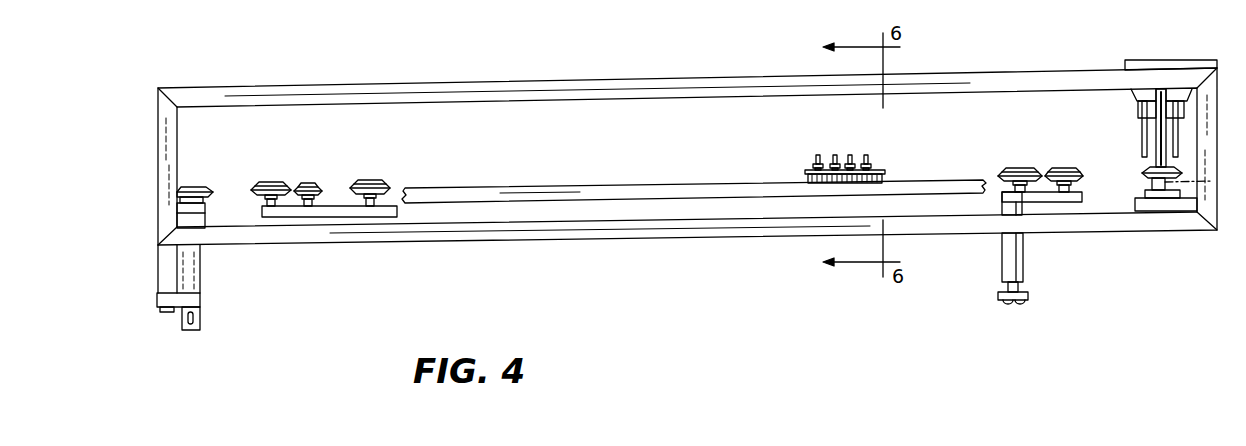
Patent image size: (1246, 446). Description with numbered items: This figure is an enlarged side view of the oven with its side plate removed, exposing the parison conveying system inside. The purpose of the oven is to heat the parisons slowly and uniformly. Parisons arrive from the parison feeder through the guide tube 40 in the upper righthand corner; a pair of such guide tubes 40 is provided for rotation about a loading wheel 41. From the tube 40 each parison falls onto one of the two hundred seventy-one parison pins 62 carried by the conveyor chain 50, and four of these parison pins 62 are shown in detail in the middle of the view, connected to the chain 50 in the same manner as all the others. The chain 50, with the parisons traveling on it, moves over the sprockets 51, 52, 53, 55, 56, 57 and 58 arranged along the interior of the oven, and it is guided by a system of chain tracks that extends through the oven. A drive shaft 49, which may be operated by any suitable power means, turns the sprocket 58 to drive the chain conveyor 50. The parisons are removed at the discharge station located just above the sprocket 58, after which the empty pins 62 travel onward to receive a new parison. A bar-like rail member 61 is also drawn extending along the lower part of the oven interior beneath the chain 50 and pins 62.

The guide tube 40 is at (1181, 92).
The loading wheel 41 is at (1142, 146).
The drive shaft 49 is at (193, 281).
The conveyor chain 50 is at (885, 172).
The sprocket 51 is at (1142, 172).
The sprocket 52 is at (313, 183).
The sprocket 53 is at (1064, 168).
The sprocket 55 is at (385, 183).
The sprocket 56 is at (1020, 168).
The sprocket 57 is at (285, 183).
The sprocket 58 is at (201, 187).
The bar 61 is at (968, 181).
The parison pin 62 is at (866, 155).